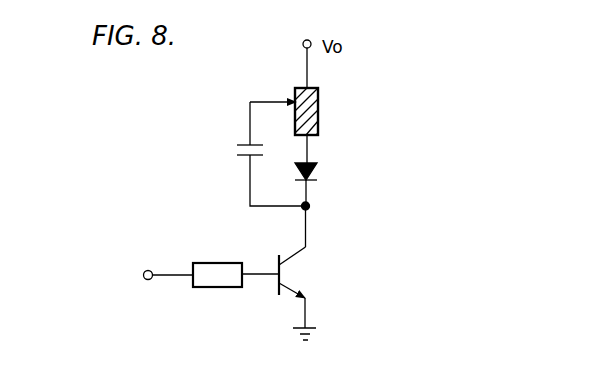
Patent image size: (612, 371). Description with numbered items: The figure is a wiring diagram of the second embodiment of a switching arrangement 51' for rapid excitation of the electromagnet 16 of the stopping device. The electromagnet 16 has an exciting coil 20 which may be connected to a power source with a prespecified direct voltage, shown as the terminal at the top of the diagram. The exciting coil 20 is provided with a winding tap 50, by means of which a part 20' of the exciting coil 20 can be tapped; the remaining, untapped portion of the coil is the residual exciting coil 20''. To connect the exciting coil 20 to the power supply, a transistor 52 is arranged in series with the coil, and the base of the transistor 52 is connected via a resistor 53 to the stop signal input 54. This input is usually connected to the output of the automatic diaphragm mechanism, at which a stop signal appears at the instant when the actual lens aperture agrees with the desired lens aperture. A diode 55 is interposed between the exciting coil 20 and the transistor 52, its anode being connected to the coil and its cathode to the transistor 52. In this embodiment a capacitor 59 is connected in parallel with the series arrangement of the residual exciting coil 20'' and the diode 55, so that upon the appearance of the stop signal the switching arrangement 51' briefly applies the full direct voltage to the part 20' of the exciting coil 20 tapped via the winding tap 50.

The electromagnet 16 is at (327, 92).
The exciting coil 20 is at (328, 111).
The tapped part of exciting coil 20' is at (275, 74).
The residual exciting coil 20'' is at (286, 131).
The winding tap 50 is at (250, 100).
The switching arrangement 51' is at (233, 245).
The transistor 52 is at (305, 255).
The resistor 53 is at (218, 287).
The stop signal input 54 is at (143, 278).
The diode 55 is at (317, 170).
The capacitor 59 is at (243, 158).